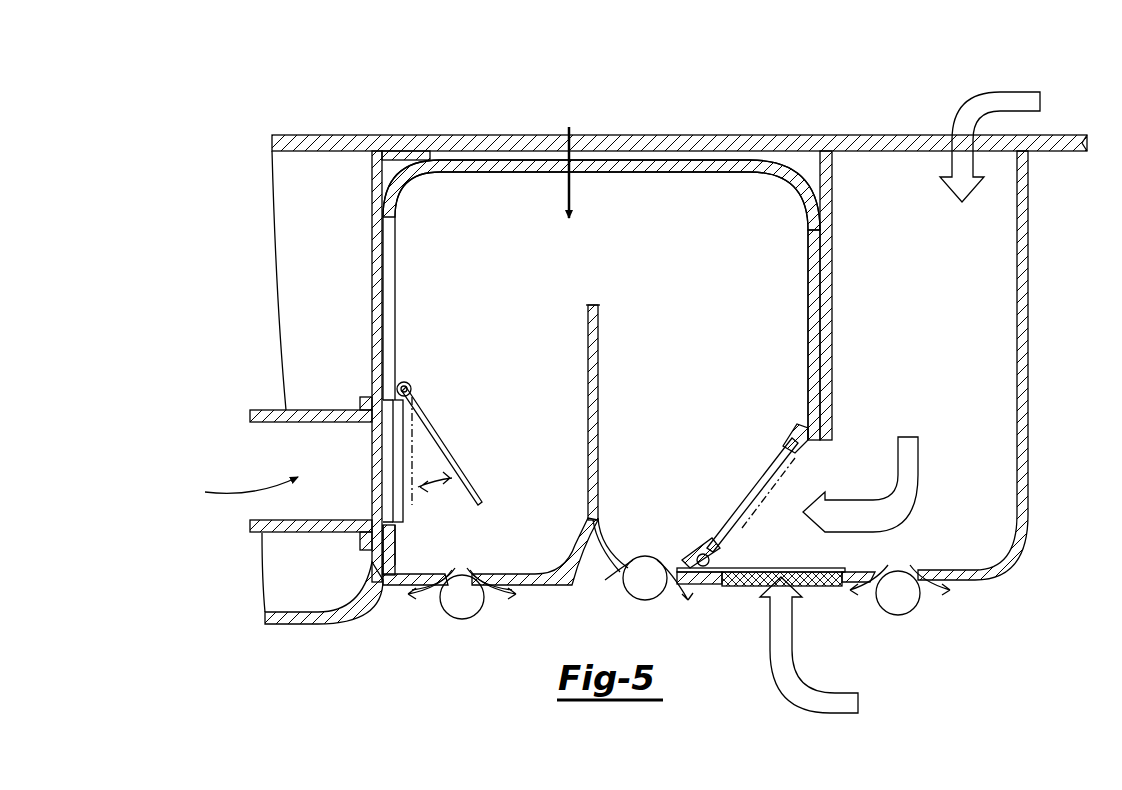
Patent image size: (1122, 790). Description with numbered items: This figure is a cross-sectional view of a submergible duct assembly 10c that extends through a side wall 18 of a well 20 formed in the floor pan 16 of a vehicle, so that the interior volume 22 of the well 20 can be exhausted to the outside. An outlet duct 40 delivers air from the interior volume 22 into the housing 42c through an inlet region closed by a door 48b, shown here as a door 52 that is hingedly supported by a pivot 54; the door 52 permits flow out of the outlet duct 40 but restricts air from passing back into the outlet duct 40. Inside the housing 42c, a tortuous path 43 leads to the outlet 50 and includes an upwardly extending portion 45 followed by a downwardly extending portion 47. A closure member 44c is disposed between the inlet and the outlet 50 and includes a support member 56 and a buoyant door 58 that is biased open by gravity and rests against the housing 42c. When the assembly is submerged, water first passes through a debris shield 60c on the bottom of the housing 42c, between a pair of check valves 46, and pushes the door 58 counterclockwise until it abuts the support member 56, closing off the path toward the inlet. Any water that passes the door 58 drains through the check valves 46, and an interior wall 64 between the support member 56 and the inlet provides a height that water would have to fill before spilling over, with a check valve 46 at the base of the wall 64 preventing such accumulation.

The duct assembly 10c is at (490, 108).
The floor pan 16 is at (1063, 140).
The side wall 18 is at (372, 198).
The well 20 is at (281, 628).
The interior volume 22 is at (239, 489).
The outlet duct 40 is at (270, 410).
The housing 42c is at (1042, 425).
The tortuous path 43 is at (567, 154).
The closure member 44c is at (720, 508).
The upwardly extending portion 45 is at (550, 389).
The check valves 46 is at (455, 602).
The downwardly extending portion 47 is at (746, 343).
The inlet opening door 48b is at (398, 452).
The outlet 50 is at (886, 200).
The door 52 is at (458, 462).
The pivot 54 is at (411, 386).
The support member 56 is at (795, 420).
The door 58 is at (790, 570).
The debris shield 60c is at (738, 588).
The interior wall 64 is at (600, 346).